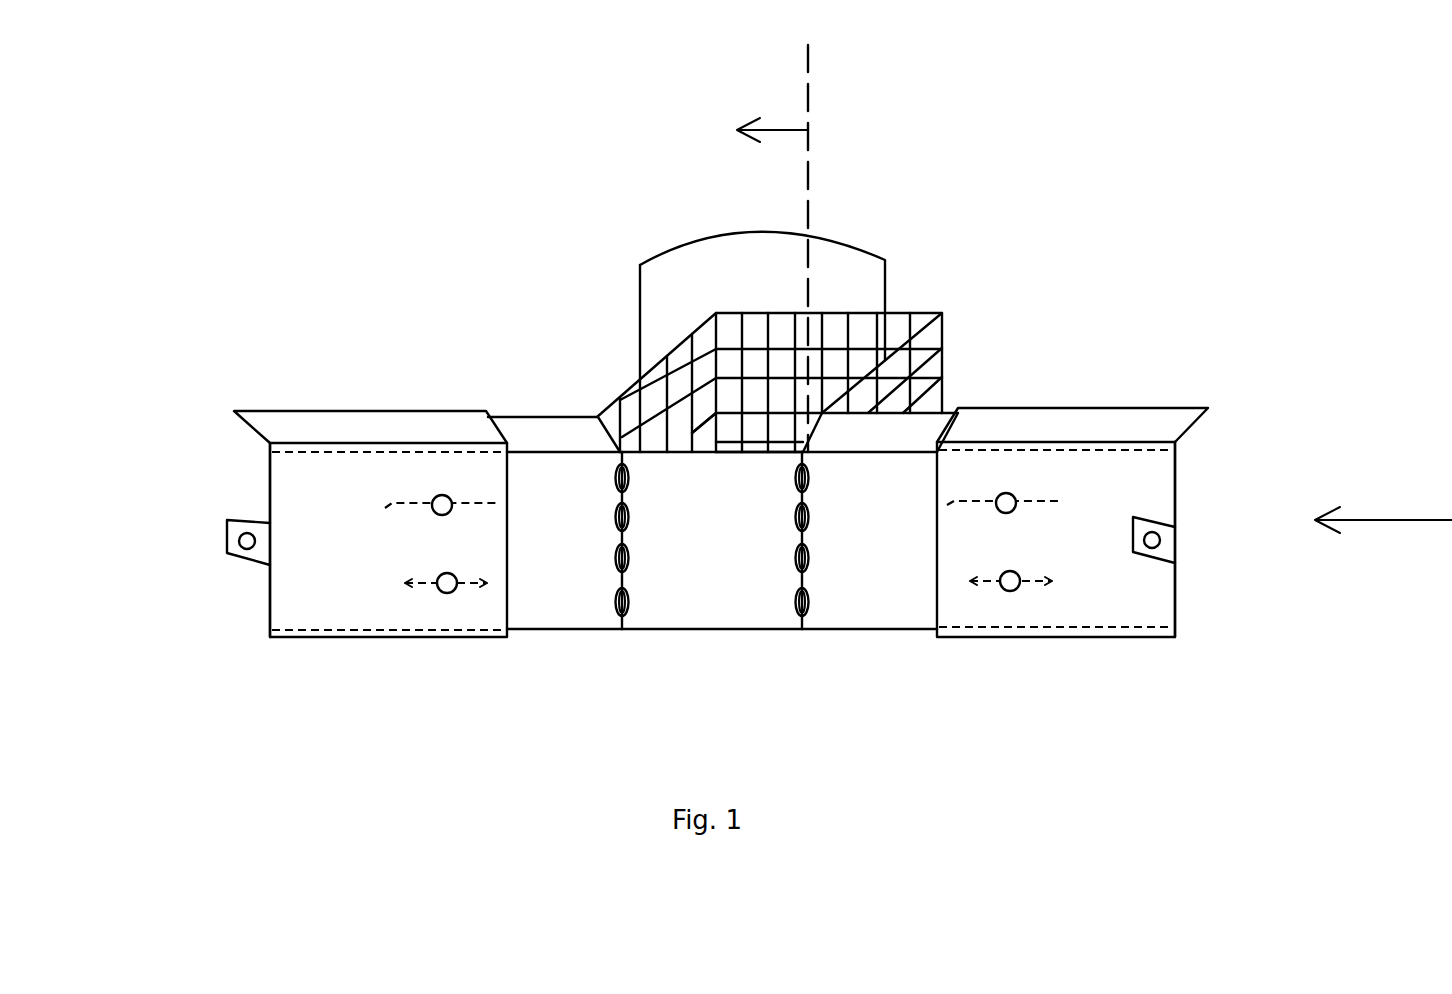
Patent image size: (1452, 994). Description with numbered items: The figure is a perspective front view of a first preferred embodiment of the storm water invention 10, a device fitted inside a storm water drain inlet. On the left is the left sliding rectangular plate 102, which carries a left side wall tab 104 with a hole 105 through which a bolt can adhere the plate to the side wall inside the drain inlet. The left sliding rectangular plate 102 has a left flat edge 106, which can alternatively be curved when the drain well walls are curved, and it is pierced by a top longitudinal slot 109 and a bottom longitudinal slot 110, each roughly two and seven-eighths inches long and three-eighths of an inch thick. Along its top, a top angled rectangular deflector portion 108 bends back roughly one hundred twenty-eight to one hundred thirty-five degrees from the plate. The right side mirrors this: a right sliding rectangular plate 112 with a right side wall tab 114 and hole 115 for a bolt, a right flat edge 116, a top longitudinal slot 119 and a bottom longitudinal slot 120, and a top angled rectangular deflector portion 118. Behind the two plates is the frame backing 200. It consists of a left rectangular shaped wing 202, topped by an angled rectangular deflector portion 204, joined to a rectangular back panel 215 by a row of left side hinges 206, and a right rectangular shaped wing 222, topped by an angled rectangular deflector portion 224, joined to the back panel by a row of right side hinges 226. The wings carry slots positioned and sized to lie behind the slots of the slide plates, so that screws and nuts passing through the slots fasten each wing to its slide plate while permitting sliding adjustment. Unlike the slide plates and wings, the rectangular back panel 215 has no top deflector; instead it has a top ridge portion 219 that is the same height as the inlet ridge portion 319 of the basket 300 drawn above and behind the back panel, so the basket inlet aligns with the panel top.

The storm water invention 10 is at (423, 277).
The left sliding rectangular plate 102 is at (298, 583).
The left side wall tab 104 is at (255, 553).
The hole 105 is at (245, 540).
The left flat edge 106 is at (268, 485).
The top angled rectangular deflector portion 108 is at (313, 432).
The top longitudinal slot 109 is at (385, 508).
The bottom longitudinal slot 110 is at (430, 588).
The right sliding rectangular plate 112 is at (1097, 583).
The right side wall tab 114 is at (1167, 553).
The hole 115 is at (1152, 540).
The right flat edge 116 is at (1177, 477).
The top angled rectangular deflector portion 118 is at (1157, 422).
The top longitudinal slot 119 is at (1037, 503).
The bottom longitudinal slot 120 is at (1037, 583).
The frame backing 200 is at (738, 575).
The left rectangular shaped wing 202 is at (575, 608).
The angled rectangular deflector portion 204 is at (540, 430).
The row of left side hinges 206 is at (617, 558).
The rectangular back panel 215 is at (727, 608).
The top ridge portion 219 is at (690, 452).
The right rectangular shaped wing 222 is at (877, 590).
The angled rectangular deflector portion 224 is at (900, 430).
The row of right side hinges 226 is at (808, 558).
The basket 300 is at (782, 363).
The inlet ridge portion 319 is at (733, 452).